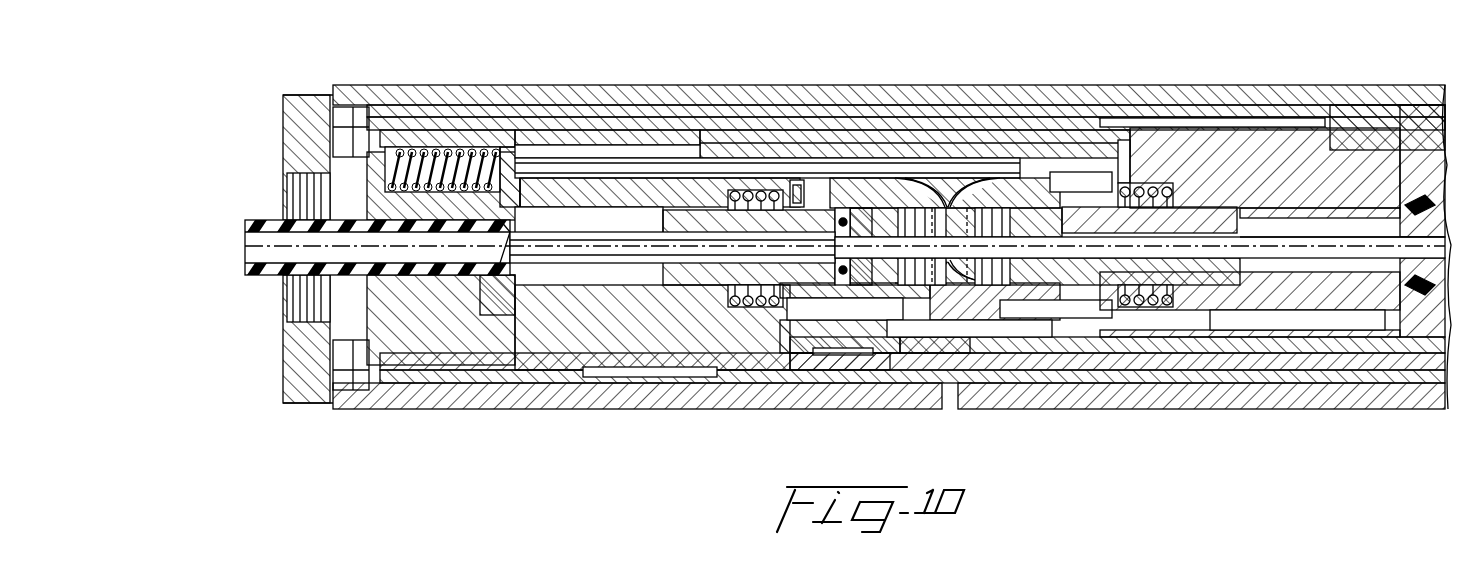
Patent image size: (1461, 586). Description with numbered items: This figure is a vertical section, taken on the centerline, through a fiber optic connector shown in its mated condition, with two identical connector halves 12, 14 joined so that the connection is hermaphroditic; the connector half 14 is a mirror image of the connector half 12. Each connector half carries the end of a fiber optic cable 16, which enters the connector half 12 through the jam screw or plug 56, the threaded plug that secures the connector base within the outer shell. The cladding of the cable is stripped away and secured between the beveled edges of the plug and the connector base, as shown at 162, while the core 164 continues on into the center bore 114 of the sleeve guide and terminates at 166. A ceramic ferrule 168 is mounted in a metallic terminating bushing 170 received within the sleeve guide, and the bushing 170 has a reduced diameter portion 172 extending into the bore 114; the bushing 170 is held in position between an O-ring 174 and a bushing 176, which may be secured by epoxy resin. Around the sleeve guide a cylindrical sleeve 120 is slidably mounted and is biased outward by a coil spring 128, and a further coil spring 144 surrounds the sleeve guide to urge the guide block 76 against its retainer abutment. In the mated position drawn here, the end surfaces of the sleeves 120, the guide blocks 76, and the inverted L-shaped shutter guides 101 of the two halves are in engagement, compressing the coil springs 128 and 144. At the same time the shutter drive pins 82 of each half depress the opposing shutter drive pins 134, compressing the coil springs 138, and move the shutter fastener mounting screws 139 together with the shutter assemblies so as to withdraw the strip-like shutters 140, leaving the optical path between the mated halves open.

The connector half 12 is at (591, 85).
The connector half 14 is at (1324, 85).
The fiber optic cable 16 is at (261, 219).
The jam screw 56 is at (350, 290).
The guide block 76 is at (813, 298).
The shutter drive pin 82 is at (931, 160).
The shutter guide 101 is at (965, 185).
The center bore 114 is at (640, 258).
The sleeve 120 is at (875, 300).
The coil spring 128 is at (920, 287).
The shutter drive pin 134 is at (708, 167).
The coil spring 138 is at (414, 150).
The mounting screw 139 is at (797, 183).
The shutter 140 is at (1075, 322).
The coil spring 144 is at (752, 306).
The secured cladding 162 is at (505, 290).
The core 164 is at (700, 268).
The core termination 166 is at (797, 247).
The ceramic ferrule 168 is at (905, 185).
The terminating bushing 170 is at (864, 215).
The reduced diameter portion 172 is at (810, 292).
The O-ring 174 is at (840, 218).
The bushing 176 is at (886, 226).